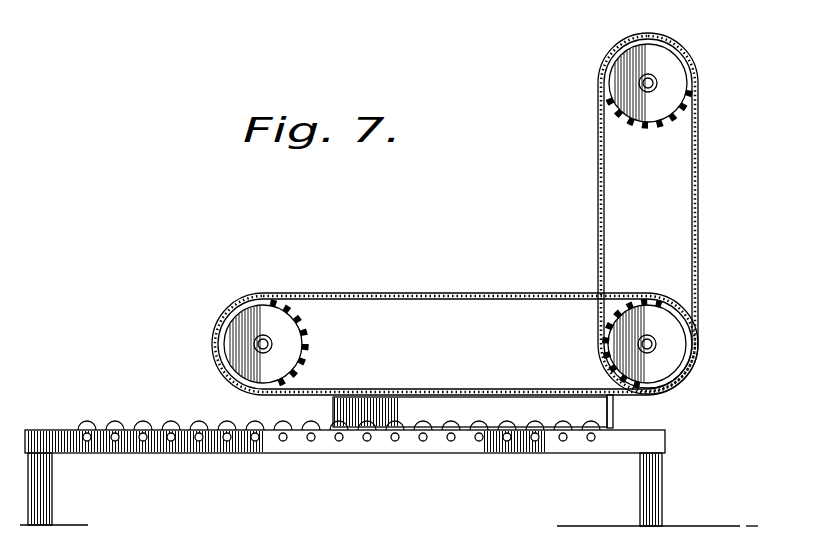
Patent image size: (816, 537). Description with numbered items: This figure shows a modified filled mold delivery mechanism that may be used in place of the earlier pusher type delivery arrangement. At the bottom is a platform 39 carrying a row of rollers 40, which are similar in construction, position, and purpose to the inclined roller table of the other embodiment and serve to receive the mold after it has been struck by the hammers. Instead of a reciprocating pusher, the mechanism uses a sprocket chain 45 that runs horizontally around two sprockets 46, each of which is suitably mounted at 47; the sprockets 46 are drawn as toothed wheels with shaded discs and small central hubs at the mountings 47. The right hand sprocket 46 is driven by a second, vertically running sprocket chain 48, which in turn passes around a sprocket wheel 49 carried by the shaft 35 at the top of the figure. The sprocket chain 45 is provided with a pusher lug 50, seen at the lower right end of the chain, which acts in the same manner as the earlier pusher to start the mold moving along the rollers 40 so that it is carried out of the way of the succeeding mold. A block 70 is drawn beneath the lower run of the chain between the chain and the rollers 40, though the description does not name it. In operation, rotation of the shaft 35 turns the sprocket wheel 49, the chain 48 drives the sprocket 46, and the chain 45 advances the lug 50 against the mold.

The shaft 35 is at (657, 81).
The sprocket wheel 49 is at (685, 97).
The sprocket chain 48 is at (697, 222).
The sprocket chain 45 is at (472, 286).
The sprockets 46 is at (292, 341).
The sprocket mountings 47 is at (262, 347).
The support block 70 is at (450, 414).
The pusher lug 50 is at (614, 409).
The rollers 40 is at (201, 429).
The platform 39 is at (304, 453).